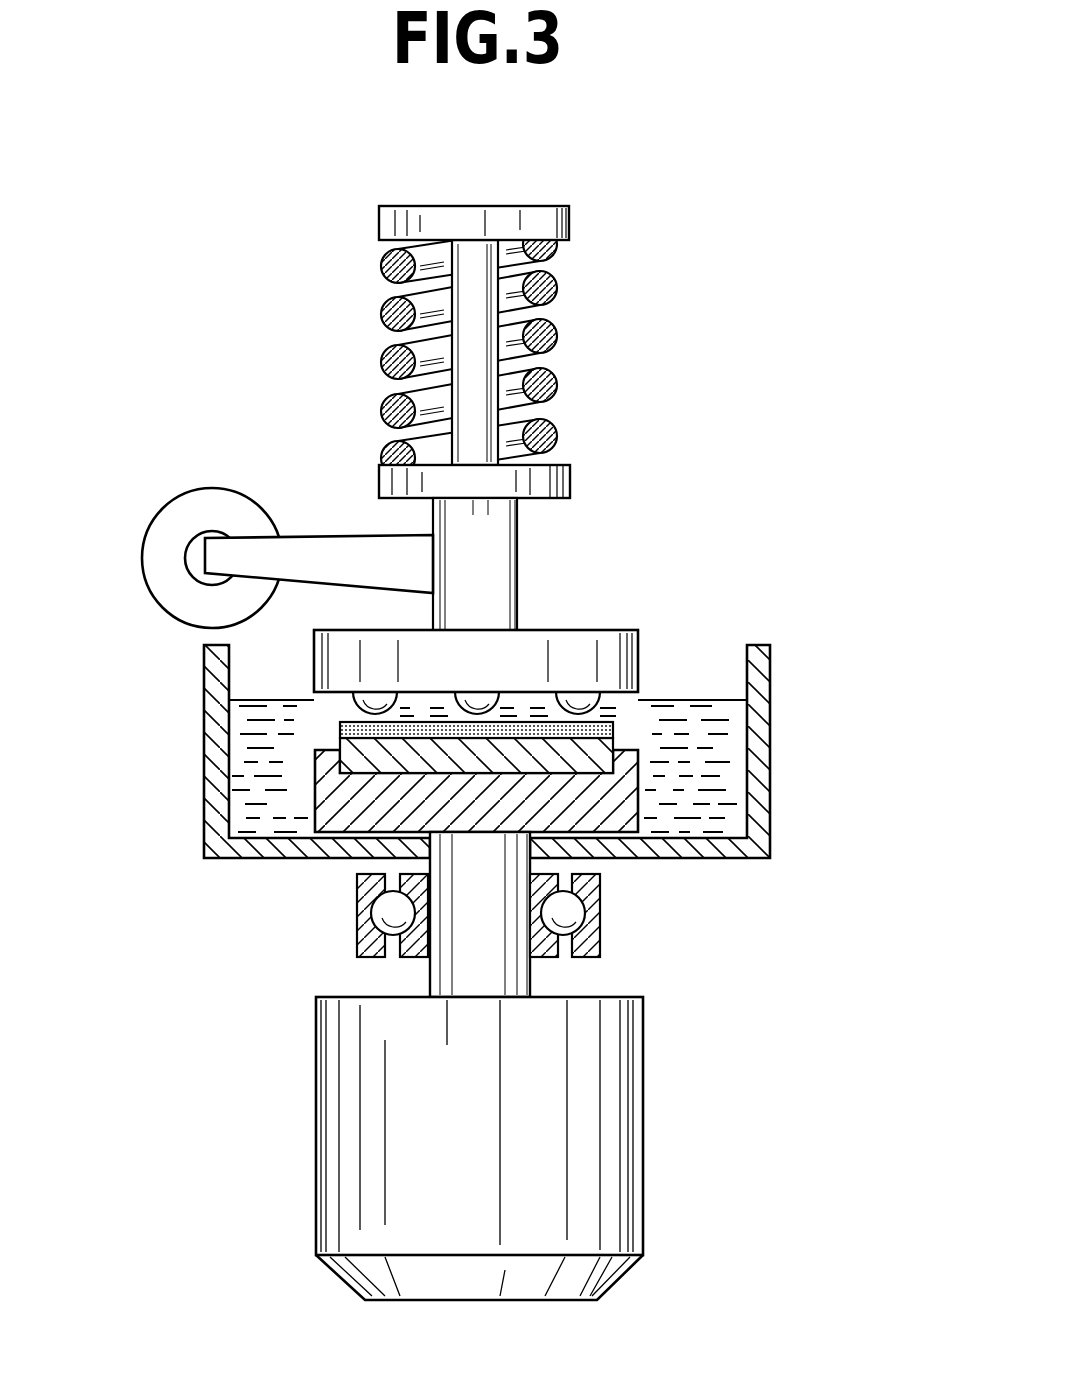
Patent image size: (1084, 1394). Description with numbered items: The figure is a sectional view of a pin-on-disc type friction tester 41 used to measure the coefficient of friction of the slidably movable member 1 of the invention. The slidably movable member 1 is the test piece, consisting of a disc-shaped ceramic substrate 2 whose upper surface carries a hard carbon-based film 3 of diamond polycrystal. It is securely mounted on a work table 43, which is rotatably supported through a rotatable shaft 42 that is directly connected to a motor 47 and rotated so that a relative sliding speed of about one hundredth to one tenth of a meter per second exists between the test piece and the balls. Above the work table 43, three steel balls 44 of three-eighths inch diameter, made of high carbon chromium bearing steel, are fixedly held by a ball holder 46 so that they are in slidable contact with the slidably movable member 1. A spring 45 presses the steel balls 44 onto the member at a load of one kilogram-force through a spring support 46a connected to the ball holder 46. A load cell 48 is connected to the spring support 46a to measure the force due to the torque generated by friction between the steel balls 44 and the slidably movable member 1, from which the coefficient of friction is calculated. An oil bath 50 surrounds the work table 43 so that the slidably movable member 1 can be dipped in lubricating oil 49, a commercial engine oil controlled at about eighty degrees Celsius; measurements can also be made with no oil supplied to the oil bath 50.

The friction tester 41 is at (243, 376).
The spring 45 is at (563, 388).
The spring support 46a is at (500, 535).
The load cell 48 is at (180, 512).
The steel balls 44 is at (580, 688).
The ball holder 46 is at (630, 640).
The hard carbon-based film 3 is at (616, 733).
The slidably movable member 1 is at (630, 733).
The substrate 2 is at (605, 760).
The oil bath 50 is at (755, 800).
The lubricating oil 49 is at (700, 816).
The work table 43 is at (613, 806).
The rotatable shaft 42 is at (497, 977).
The motor 47 is at (610, 1084).